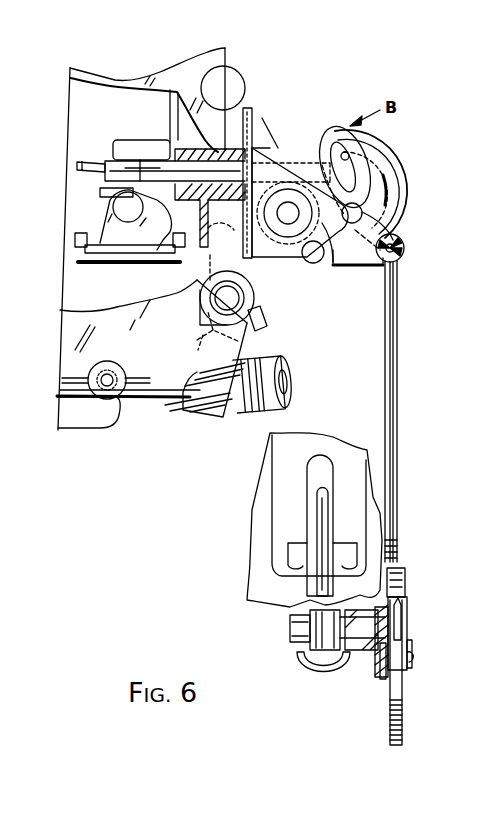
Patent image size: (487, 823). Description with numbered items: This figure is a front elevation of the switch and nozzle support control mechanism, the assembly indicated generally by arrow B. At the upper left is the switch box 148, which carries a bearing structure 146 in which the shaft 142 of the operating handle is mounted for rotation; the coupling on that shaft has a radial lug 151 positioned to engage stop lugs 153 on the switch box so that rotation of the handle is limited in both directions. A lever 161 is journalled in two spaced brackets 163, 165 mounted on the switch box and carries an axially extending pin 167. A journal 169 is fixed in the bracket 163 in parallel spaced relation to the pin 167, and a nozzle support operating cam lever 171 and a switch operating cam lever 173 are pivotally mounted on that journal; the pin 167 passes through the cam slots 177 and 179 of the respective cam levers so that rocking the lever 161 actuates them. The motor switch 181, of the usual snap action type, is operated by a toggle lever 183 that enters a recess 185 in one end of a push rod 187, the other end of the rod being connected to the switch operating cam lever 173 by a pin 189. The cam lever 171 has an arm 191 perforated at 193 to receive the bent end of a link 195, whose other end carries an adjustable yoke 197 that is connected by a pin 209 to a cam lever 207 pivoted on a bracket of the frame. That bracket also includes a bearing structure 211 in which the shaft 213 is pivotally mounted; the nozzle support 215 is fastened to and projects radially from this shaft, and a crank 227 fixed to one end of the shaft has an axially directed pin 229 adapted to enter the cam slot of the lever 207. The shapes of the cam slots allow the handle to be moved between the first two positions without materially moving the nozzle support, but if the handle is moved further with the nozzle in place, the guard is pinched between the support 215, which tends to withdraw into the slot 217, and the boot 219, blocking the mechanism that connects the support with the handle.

The shaft 142 is at (240, 295).
The bearing structure 146 is at (207, 317).
The switch box 148 is at (78, 78).
The radial lug 151 is at (262, 317).
The stop lug 153 is at (210, 266).
The lever 161 is at (358, 268).
The bracket 163 is at (257, 148).
The bracket 165 is at (278, 248).
The pin 167 is at (364, 213).
The journal 169 is at (311, 264).
The nozzle support operating cam lever 171 is at (389, 196).
The switch operating cam lever 173 is at (373, 157).
The cam slot 177 is at (376, 187).
The cam slot 179 is at (350, 162).
The motor switch 181 is at (125, 233).
The toggle lever 183 is at (140, 160).
The recess 185 is at (217, 198).
The push rod 187 is at (280, 148).
The pin 189 is at (315, 147).
The arm 191 is at (404, 250).
The perforation 193 is at (402, 244).
The link 195 is at (398, 384).
The adjustable yoke 197 is at (406, 580).
The cam lever 207 is at (403, 714).
The pin 209 is at (413, 655).
The bearing structure 211 is at (292, 634).
The shaft 213 is at (342, 612).
The nozzle support 215 is at (326, 505).
The slot 217 is at (332, 462).
The boot 219 is at (280, 470).
The crank 227 is at (382, 680).
The pin 229 is at (386, 690).